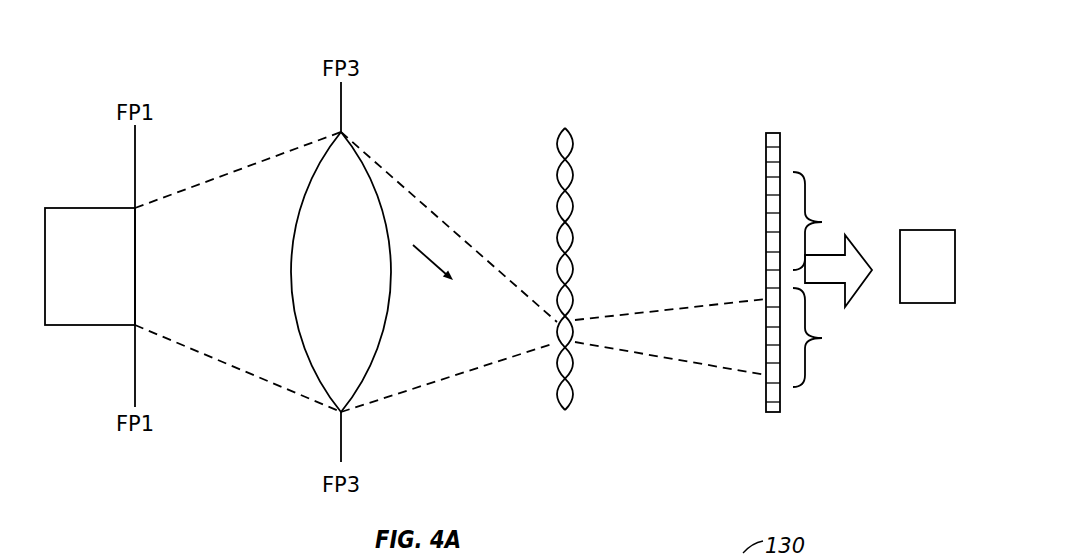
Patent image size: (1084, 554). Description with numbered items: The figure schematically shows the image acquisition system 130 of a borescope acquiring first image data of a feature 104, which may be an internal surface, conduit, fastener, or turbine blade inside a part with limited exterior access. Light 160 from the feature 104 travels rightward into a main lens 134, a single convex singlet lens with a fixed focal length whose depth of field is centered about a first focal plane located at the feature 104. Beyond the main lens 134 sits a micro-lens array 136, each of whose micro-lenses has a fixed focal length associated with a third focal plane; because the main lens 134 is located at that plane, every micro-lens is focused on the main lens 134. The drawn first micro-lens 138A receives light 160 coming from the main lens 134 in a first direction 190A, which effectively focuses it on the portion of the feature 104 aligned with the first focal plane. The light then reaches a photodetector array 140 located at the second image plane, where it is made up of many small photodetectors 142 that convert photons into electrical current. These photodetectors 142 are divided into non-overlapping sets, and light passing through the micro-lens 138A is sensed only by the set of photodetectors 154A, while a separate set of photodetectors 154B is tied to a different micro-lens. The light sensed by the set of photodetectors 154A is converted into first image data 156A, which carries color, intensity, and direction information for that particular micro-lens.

The image acquisition system 130 is at (727, 33).
The feature 104 is at (90, 266).
The main lens 134 is at (341, 272).
The micro-lens array 136 is at (572, 127).
The first micro-lens 138A is at (553, 333).
The photodetector array 140 is at (780, 132).
The photodetectors 142 is at (768, 145).
The set of photodetectors 154A is at (822, 338).
The set of photodetectors 154B is at (822, 222).
The first image data 156A is at (918, 230).
The light 160 is at (400, 180).
The first direction 190A is at (423, 257).